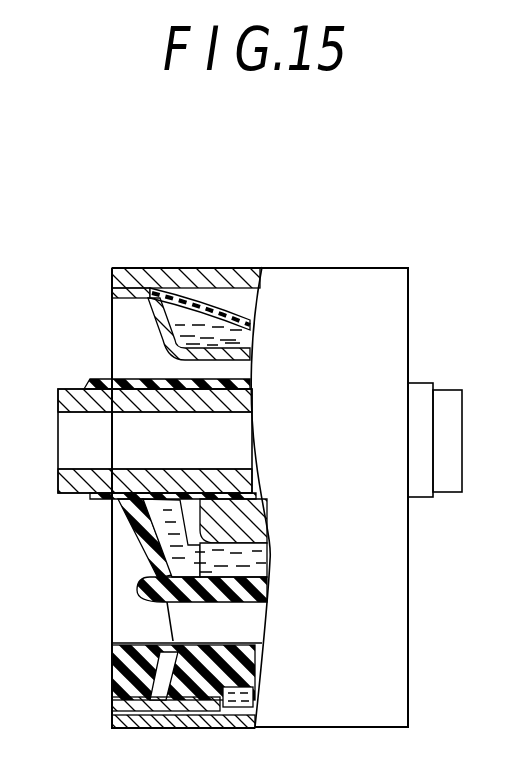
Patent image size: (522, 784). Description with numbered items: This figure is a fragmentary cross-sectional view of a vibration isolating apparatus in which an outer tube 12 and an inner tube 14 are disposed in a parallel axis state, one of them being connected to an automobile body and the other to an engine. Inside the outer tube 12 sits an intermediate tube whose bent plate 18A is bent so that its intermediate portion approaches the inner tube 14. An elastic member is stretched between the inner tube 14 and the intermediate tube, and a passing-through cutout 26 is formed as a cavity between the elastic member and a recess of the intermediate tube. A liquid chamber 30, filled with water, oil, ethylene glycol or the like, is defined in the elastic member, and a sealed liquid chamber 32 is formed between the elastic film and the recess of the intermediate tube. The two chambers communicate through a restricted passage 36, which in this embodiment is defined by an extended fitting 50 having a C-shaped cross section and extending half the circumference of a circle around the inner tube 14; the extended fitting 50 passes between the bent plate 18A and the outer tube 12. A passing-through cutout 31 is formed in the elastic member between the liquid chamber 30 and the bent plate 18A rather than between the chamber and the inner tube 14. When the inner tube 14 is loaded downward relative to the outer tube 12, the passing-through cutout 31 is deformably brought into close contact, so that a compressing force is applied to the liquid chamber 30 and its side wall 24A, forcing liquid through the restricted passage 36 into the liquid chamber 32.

The outer tube 12 is at (133, 728).
The inner tube 14 is at (70, 388).
The bent plate 18A is at (250, 638).
The side wall 24A is at (155, 562).
The passing-through cutout 26 is at (243, 374).
The liquid chamber 30 is at (249, 579).
The passing-through cutout 31 is at (218, 636).
The liquid chamber 32 is at (188, 320).
The restricted passage 36 is at (236, 728).
The extended fitting 50 is at (252, 690).